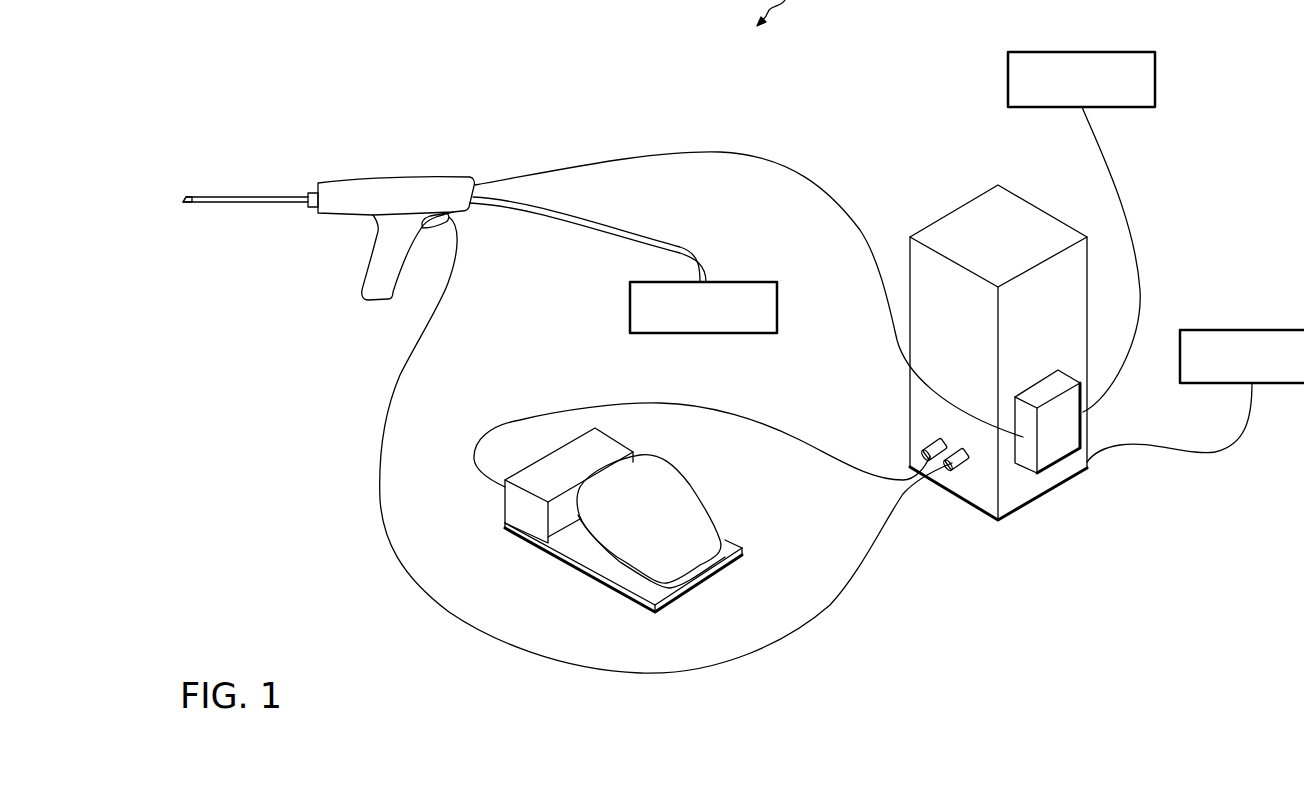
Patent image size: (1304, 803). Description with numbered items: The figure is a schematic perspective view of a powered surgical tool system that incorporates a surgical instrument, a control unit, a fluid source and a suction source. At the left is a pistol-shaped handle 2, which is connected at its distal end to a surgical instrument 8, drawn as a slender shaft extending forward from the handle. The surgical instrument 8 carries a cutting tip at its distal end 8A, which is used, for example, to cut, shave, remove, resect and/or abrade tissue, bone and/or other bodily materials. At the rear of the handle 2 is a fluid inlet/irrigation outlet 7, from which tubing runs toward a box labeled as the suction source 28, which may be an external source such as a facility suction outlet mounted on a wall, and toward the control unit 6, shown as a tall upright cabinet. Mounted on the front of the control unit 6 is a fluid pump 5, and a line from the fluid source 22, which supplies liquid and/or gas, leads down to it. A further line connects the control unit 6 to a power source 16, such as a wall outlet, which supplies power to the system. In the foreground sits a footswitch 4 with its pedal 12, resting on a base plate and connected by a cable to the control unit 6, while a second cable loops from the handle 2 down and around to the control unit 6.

The handle 2 is at (384, 177).
The surgical instrument 8 is at (218, 194).
The distal end 8A is at (185, 198).
The fluid inlet/irrigation outlet 7 is at (478, 180).
The suction source 28 is at (757, 282).
The control unit 6 is at (943, 213).
The fluid pump 5 is at (1070, 430).
The fluid source 22 is at (1157, 75).
The power source 16 is at (1291, 329).
The footswitch 4 is at (595, 440).
The pedal 12 is at (680, 490).